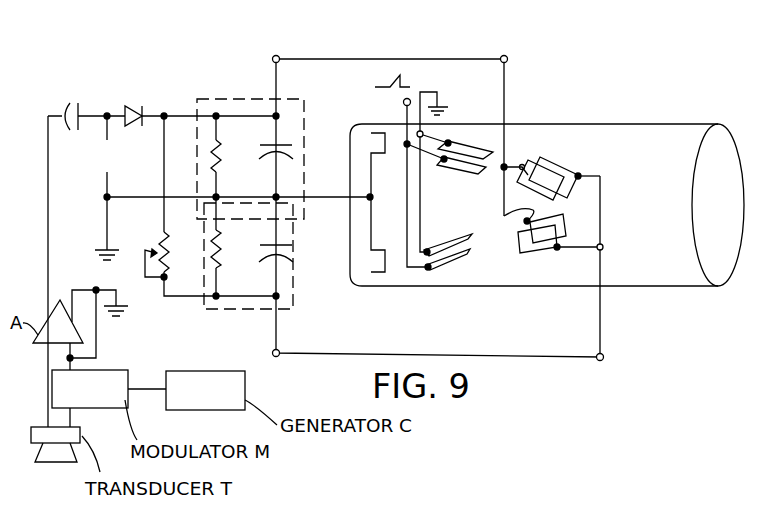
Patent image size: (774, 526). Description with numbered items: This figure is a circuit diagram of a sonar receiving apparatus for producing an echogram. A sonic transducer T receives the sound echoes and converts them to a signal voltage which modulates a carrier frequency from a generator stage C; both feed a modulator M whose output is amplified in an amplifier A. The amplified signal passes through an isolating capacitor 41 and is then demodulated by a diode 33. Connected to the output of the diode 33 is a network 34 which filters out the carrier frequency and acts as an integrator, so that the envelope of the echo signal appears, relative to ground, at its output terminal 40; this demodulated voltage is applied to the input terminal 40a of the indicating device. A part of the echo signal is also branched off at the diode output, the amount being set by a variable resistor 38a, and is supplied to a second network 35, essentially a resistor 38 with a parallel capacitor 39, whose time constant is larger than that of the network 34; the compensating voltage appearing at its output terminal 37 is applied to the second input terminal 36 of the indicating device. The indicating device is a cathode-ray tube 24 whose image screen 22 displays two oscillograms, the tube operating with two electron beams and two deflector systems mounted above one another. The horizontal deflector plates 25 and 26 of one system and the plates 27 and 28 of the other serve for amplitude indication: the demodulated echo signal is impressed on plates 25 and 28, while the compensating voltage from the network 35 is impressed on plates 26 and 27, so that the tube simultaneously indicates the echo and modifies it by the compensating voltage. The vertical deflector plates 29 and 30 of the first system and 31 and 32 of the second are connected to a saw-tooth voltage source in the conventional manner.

The image screen 22 is at (710, 133).
The cathode-ray tube 24 is at (627, 276).
The horizontal deflection plate 25 is at (531, 165).
The horizontal deflection plate 26 is at (568, 162).
The horizontal deflection plate 27 is at (518, 240).
The horizontal deflection plate 28 is at (504, 216).
The vertical deflection plate 29 is at (477, 148).
The vertical deflection plate 30 is at (463, 176).
The vertical deflection plate 31 is at (438, 242).
The vertical deflection plate 32 is at (472, 256).
The diode 33 is at (132, 105).
The network 34 is at (197, 100).
The second network 35 is at (293, 285).
The second input terminal 36 is at (601, 362).
The output terminal 37 is at (276, 358).
The resistor 38 is at (218, 259).
The variable resistor 38a is at (156, 240).
The capacitor 39 is at (290, 245).
The output terminal 40 is at (281, 52).
The input terminal 40a is at (505, 52).
The isolating capacitor 41 is at (77, 100).